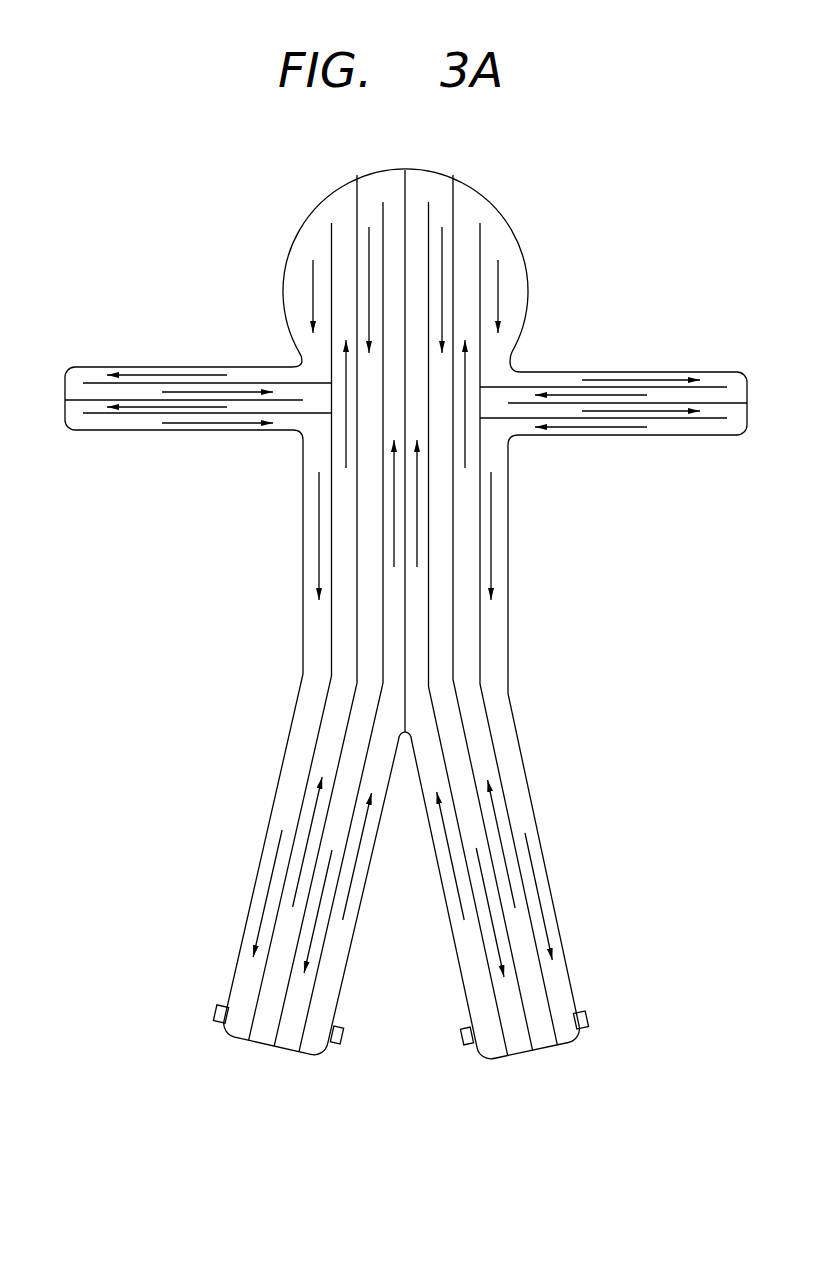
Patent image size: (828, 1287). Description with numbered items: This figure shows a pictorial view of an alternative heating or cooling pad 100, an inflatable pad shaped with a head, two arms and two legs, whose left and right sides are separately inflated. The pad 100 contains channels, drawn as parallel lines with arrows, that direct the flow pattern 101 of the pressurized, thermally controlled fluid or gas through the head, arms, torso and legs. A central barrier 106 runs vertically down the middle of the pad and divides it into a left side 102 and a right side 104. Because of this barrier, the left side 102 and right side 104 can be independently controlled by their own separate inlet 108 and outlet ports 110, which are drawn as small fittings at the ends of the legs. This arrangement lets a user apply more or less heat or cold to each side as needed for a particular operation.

The heating or cooling pad 100 is at (578, 185).
The flow pattern 101 is at (498, 290).
The left side 102 is at (287, 617).
The right side 104 is at (530, 632).
The central barrier 106 is at (403, 185).
The inlet port 108 is at (340, 1042).
The outlet port 110 is at (218, 1010).